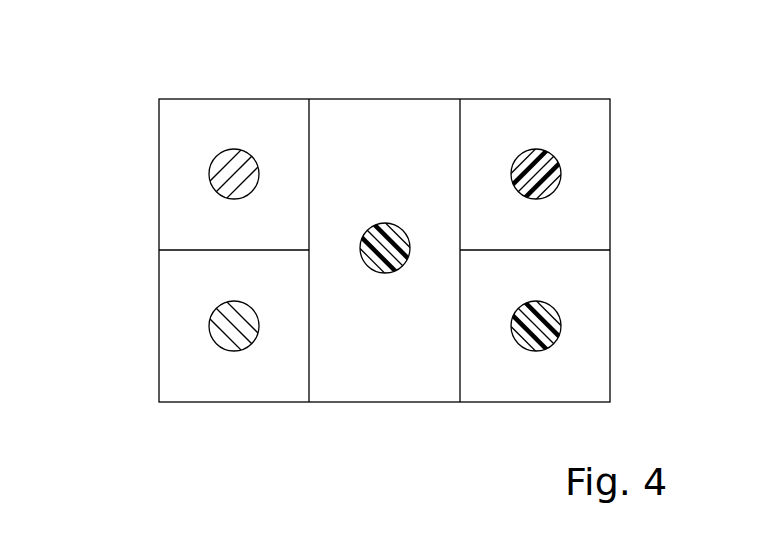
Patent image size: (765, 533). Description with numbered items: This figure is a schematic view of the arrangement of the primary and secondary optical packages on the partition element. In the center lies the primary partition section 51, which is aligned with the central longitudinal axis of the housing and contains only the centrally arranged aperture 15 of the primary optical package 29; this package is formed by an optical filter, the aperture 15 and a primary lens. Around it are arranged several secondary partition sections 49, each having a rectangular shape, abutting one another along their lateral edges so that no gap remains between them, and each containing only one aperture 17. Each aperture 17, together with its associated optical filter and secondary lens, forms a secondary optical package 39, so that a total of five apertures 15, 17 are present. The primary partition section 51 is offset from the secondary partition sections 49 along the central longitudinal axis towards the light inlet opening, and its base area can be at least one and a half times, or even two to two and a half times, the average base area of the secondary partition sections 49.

The centrally arranged aperture 15 is at (409, 339).
The primary optical package 29 is at (392, 255).
The aperture 17 is at (381, 250).
The secondary optical package 39 is at (208, 169).
The secondary partition section 49 is at (182, 222).
The primary partition section 51 is at (400, 143).